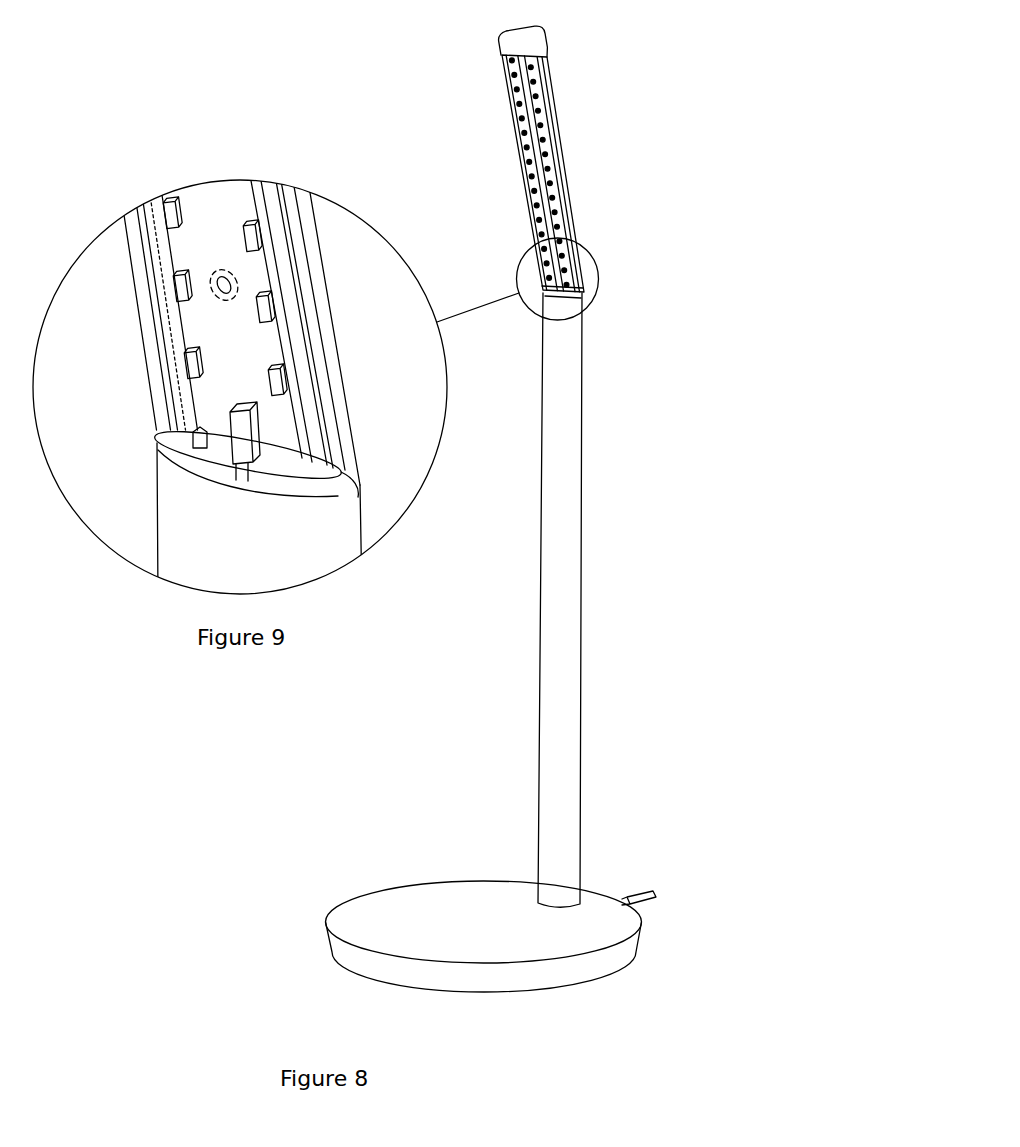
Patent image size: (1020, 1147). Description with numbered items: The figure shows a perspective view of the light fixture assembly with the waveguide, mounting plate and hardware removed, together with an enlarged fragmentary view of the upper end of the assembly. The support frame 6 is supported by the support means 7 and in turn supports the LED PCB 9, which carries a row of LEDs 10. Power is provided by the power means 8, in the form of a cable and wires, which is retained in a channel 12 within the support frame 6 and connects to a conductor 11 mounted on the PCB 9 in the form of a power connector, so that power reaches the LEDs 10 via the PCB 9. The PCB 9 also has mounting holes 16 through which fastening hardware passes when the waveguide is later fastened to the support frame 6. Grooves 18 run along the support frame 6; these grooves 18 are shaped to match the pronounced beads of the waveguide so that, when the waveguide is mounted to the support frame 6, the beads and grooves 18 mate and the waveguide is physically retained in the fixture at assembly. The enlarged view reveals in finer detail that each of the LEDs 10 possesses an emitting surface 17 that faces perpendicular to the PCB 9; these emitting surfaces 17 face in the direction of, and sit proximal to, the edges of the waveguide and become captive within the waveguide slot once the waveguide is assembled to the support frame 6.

In FIG. 8, the support frame 6 is at (503, 80).
In FIG. 9, the support frame 6 is at (222, 538).
In FIG. 8, the support means 7 is at (467, 913).
In FIG. 8, the power means 8 is at (543, 308).
In FIG. 9, the power means 8 is at (332, 462).
In FIG. 8, the LED PCB 9 is at (538, 150).
In FIG. 9, the LED PCB 9 is at (162, 335).
In FIG. 8, the LEDs 10 is at (530, 138).
In FIG. 9, the LEDs 10 is at (187, 365).
In FIG. 8, the conductor 11 is at (567, 283).
In FIG. 9, the conductor 11 is at (337, 403).
In FIG. 8, the channel 12 is at (580, 300).
In FIG. 9, the channel 12 is at (170, 436).
In FIG. 8, the mounting holes 16 is at (527, 50).
In FIG. 9, the mounting holes 16 is at (213, 276).
In FIG. 9, the emitting surface 17 is at (283, 314).
In FIG. 8, the grooves 18 is at (510, 112).
In FIG. 9, the grooves 18 is at (158, 293).